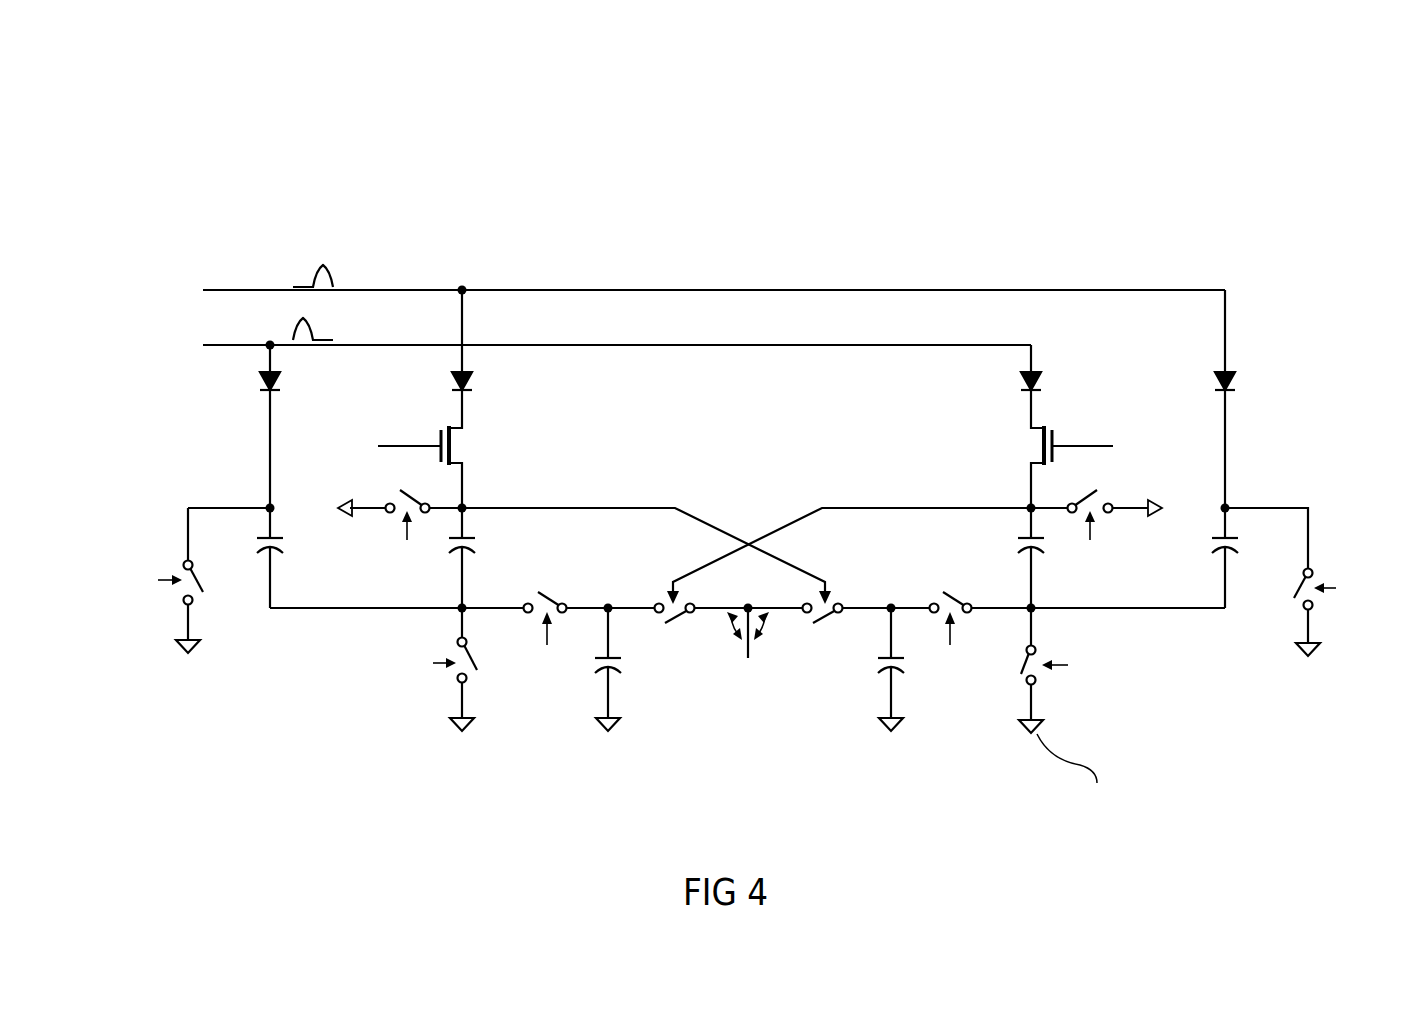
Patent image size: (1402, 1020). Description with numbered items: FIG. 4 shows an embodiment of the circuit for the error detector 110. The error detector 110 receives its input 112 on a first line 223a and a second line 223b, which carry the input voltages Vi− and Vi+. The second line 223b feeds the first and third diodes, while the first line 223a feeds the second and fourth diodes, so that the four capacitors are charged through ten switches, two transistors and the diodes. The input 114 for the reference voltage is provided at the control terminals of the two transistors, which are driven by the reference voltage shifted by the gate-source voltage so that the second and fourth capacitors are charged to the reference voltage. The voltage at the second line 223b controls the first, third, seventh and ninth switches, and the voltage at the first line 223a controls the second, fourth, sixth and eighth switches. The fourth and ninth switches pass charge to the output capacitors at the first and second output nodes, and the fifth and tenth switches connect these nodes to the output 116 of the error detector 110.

The error detector 110 is at (252, 98).
The input 112 is at (172, 256).
The input for the reference voltage 114 is at (378, 446).
The output 116 is at (731, 656).
The first line 223a is at (267, 288).
The second line 223b is at (225, 345).